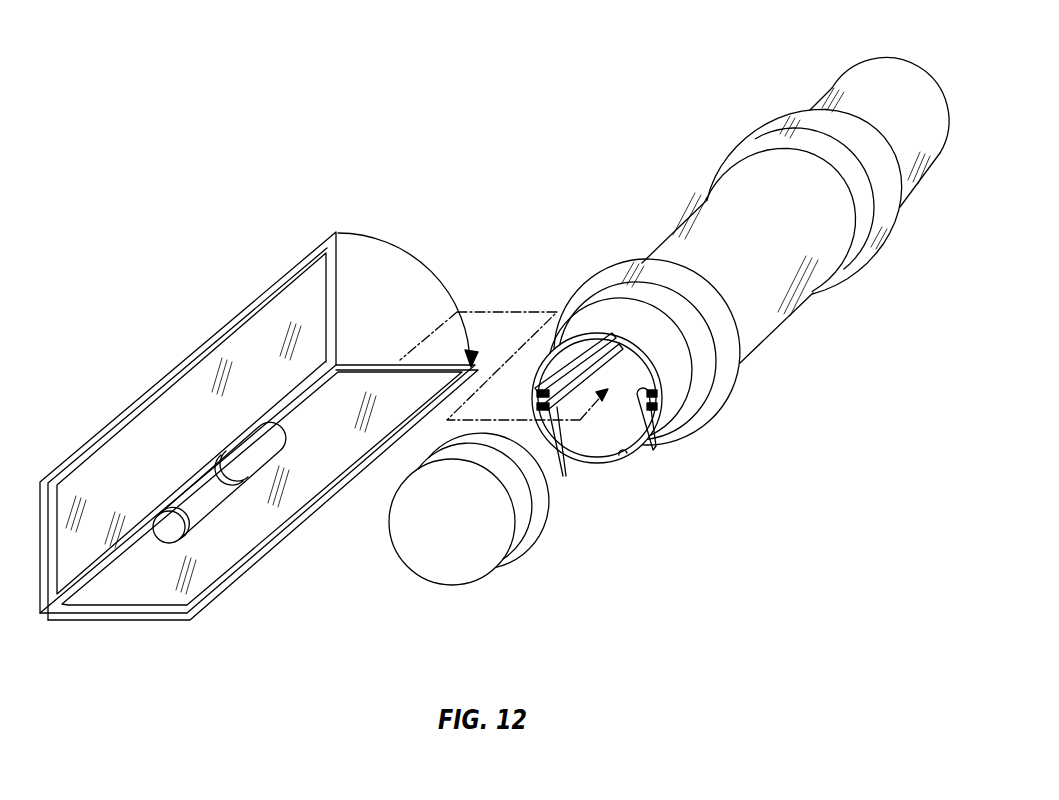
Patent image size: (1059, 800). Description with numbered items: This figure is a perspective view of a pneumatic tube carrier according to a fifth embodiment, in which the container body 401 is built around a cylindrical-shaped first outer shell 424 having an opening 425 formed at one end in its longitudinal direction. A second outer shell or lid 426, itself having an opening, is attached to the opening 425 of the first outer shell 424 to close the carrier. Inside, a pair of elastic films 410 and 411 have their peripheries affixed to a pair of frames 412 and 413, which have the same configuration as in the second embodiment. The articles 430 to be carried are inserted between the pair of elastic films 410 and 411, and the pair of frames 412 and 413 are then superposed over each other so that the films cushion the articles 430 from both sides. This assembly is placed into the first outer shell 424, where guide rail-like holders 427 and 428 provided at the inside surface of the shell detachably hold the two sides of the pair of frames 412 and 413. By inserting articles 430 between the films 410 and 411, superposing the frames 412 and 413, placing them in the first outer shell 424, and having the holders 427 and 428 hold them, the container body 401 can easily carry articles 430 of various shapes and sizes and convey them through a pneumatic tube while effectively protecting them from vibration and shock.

The container body 401 is at (669, 340).
The elastic film 410 is at (320, 449).
The elastic film 411 is at (184, 426).
The frame 412 is at (125, 617).
The frame 413 is at (171, 382).
The first outer shell 424 is at (777, 307).
The opening 425 is at (624, 456).
The second outer shell 426 is at (482, 577).
The guide rail-like holder 427 is at (655, 447).
The guide rail-like holder 428 is at (565, 476).
The articles 430 is at (250, 447).